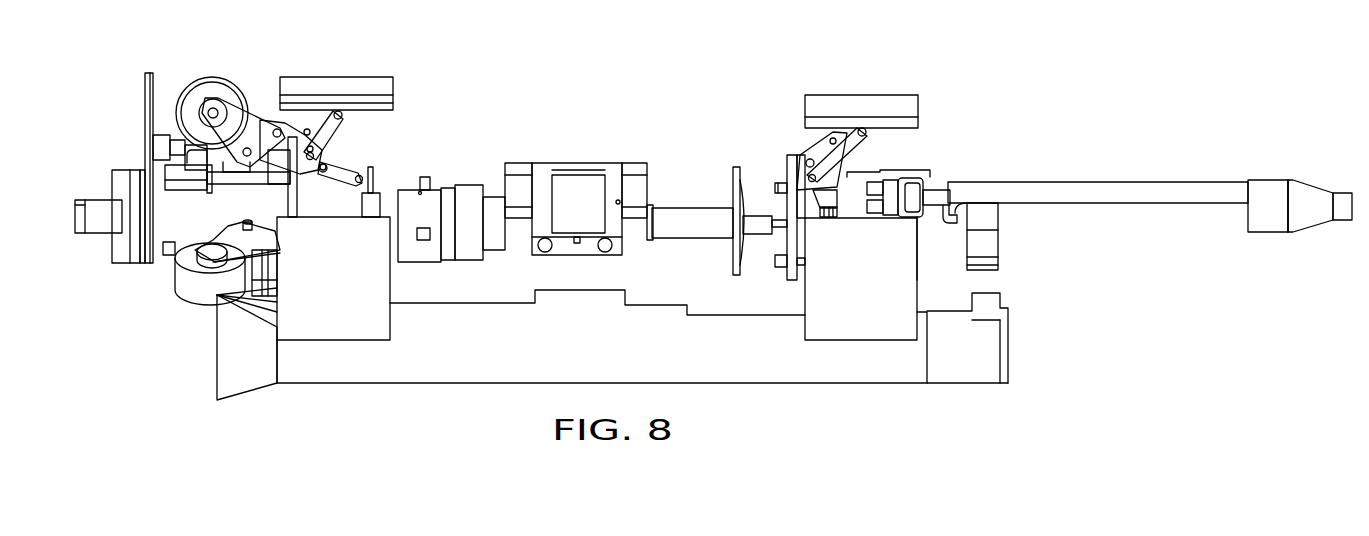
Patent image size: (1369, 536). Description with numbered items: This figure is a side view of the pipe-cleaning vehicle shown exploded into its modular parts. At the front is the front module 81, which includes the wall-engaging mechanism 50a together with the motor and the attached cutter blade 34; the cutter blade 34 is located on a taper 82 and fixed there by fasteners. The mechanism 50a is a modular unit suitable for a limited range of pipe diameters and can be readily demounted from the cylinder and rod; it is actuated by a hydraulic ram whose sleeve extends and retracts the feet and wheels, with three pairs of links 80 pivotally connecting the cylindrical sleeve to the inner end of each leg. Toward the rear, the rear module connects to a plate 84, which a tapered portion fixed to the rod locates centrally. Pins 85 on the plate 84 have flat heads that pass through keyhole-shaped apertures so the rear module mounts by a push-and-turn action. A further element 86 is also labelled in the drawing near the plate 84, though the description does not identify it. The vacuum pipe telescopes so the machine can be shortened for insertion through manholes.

The cutter blade 34 is at (75, 212).
The front module 81 is at (353, 57).
The mechanism 50a is at (417, 117).
The links 80 is at (343, 162).
The taper 82 is at (367, 205).
The plate 84 is at (785, 213).
The pins 85 is at (778, 183).
The flange disc 86 is at (742, 245).